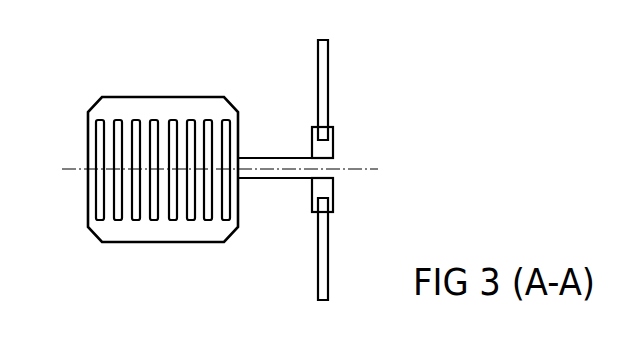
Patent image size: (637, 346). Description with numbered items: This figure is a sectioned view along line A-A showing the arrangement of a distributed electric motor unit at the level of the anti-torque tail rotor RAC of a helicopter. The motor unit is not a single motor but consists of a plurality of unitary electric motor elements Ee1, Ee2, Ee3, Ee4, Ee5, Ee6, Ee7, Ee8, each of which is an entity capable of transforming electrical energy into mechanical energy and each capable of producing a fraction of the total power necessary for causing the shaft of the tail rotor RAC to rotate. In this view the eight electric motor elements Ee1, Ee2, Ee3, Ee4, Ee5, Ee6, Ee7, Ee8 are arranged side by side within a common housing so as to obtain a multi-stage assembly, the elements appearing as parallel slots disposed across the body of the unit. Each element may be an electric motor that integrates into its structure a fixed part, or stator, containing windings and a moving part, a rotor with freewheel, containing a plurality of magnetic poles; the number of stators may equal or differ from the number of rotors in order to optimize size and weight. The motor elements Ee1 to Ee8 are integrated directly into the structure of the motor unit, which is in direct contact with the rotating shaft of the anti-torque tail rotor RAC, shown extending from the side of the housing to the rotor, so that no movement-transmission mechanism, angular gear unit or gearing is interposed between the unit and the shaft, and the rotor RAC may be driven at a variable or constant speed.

The unitary electric motor element Ee1 is at (225, 120).
The unitary electric motor element Ee2 is at (206, 220).
The unitary electric motor element Ee3 is at (189, 120).
The unitary electric motor element Ee4 is at (173, 220).
The unitary electric motor element Ee5 is at (155, 120).
The unitary electric motor element Ee6 is at (137, 220).
The unitary electric motor element Ee7 is at (120, 120).
The unitary electric motor element Ee8 is at (99, 220).
The anti-torque tail rotor RAC is at (256, 172).